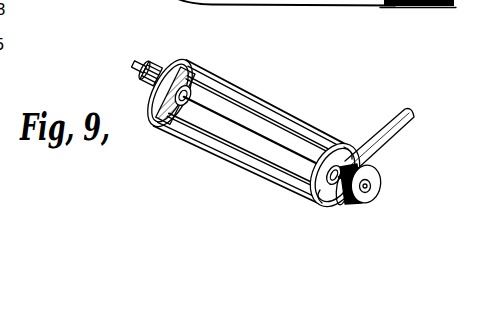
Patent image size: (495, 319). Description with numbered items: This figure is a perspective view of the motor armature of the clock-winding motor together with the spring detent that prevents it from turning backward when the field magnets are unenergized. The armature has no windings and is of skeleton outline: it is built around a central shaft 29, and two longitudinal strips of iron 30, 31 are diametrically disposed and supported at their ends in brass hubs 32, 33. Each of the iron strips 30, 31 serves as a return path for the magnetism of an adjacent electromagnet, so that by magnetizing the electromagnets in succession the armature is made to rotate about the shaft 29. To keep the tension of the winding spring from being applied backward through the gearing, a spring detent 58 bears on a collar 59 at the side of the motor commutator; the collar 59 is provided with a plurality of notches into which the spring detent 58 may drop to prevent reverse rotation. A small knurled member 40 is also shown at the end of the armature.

The central shaft 29 is at (247, 130).
The longitudinal strip of iron 30 is at (283, 110).
The longitudinal strip of iron 31 is at (232, 160).
The brass hub 32 is at (153, 96).
The brass hub 33 is at (303, 176).
The knurled knob 40 is at (159, 66).
The spring detent 58 is at (403, 123).
The collar 59 is at (345, 198).